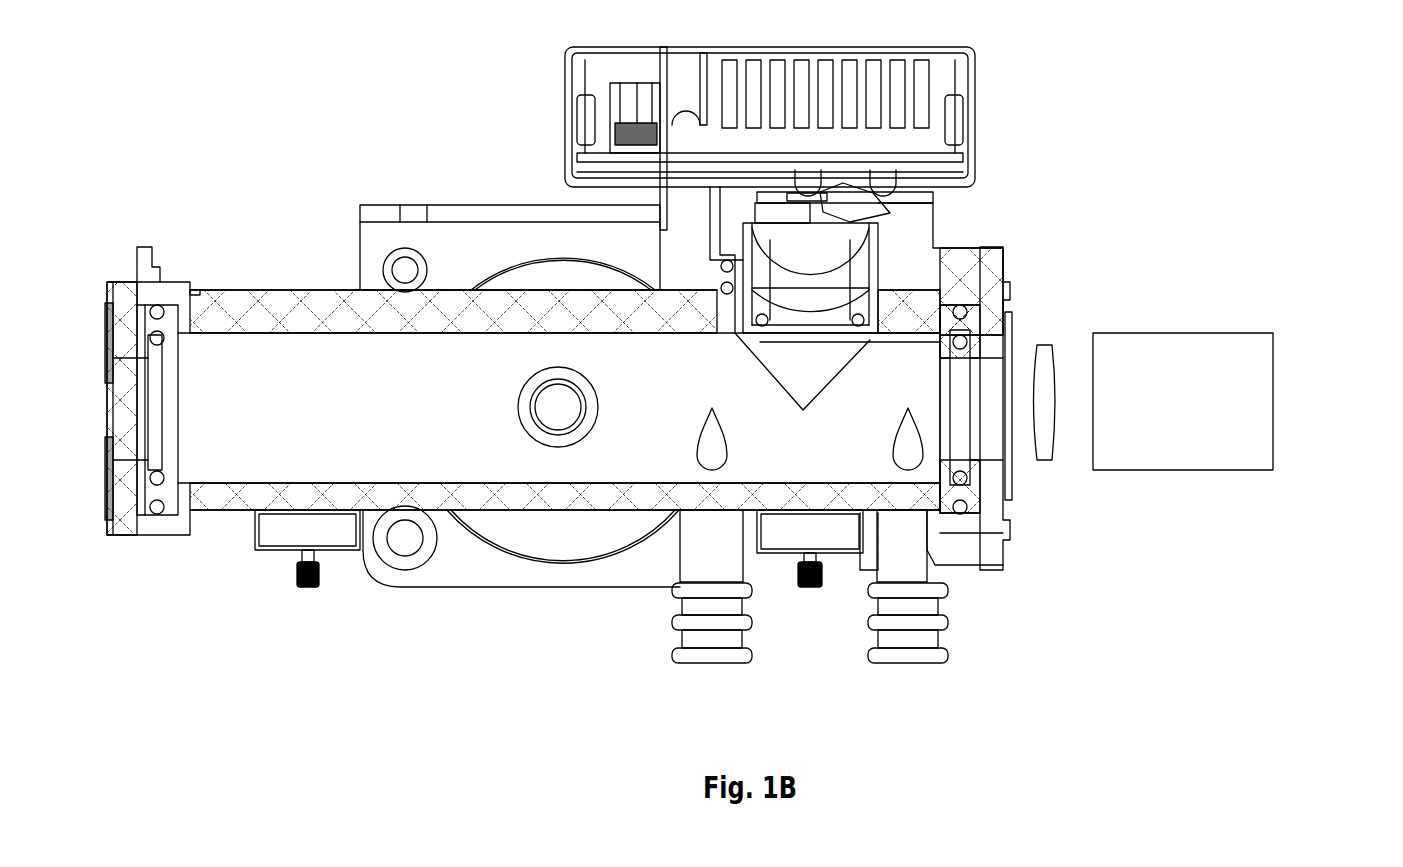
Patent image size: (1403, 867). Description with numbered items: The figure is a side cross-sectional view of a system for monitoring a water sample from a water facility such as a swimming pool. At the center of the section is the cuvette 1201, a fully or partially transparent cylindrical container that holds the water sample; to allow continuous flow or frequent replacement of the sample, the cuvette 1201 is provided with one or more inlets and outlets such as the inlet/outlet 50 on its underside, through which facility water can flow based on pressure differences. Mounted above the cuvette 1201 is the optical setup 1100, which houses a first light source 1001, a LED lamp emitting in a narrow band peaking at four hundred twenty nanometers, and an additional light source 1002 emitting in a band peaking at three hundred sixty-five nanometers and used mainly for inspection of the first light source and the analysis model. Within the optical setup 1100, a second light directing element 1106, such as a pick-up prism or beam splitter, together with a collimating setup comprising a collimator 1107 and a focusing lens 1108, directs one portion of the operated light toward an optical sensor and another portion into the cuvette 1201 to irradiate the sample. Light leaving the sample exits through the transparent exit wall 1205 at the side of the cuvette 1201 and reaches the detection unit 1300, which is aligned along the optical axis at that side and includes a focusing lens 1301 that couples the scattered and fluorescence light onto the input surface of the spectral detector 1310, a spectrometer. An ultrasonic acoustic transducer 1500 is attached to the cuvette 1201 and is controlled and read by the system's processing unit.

The inlet/outlet 50 is at (910, 635).
The first light source 1001 is at (808, 175).
The additional light source 1002 is at (873, 220).
The optical setup 1100 is at (874, 184).
The second light directing element 1106 is at (875, 280).
The collimator 1107 is at (850, 210).
The focusing lens 1108 is at (612, 230).
The cuvette 1201 is at (358, 425).
The transparent exit wall 1205 is at (1012, 415).
The detection unit 1300 is at (1216, 493).
The focusing lens 1301 is at (1037, 450).
The spectral detector 1310 is at (1183, 450).
The acoustic transducer 1500 is at (567, 423).